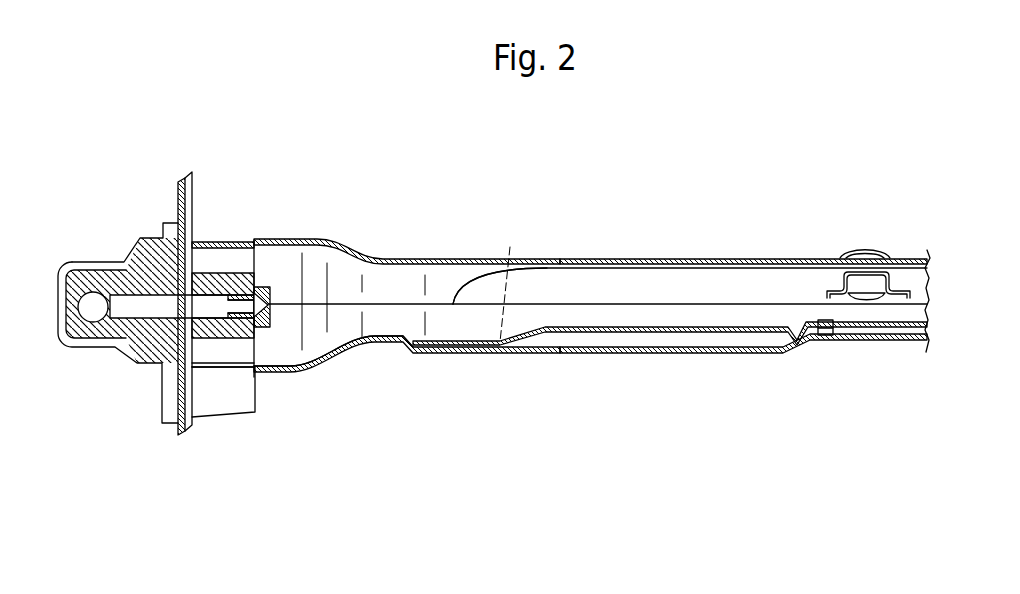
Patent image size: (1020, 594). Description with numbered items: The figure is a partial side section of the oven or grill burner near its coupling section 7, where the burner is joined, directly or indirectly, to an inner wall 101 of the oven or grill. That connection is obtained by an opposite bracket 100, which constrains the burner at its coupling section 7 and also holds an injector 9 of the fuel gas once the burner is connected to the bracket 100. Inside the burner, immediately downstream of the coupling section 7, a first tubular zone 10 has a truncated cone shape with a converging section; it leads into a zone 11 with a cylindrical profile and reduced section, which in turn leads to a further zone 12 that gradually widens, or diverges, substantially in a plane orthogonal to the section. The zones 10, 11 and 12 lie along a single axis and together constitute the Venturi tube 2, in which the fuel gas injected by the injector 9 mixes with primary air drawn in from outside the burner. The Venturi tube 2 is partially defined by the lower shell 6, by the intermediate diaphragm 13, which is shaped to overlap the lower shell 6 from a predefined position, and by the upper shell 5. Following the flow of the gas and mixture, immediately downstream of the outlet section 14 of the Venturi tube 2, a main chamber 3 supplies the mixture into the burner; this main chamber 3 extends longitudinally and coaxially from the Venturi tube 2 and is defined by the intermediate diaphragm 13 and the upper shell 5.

The Venturi tube 2 is at (372, 230).
The main chamber 3 is at (791, 238).
The upper shell 5 is at (672, 263).
The lower shell 6 is at (640, 354).
The coupling section 7 is at (290, 370).
The injector 9 is at (242, 305).
The first tubular zone 10 is at (339, 344).
The cylindrical zone 11 is at (402, 278).
The diverging zone 12 is at (464, 320).
The intermediate diaphragm 13 is at (715, 328).
The outlet section 14 is at (525, 291).
The bracket 100 is at (217, 397).
The inner wall 101 is at (188, 200).